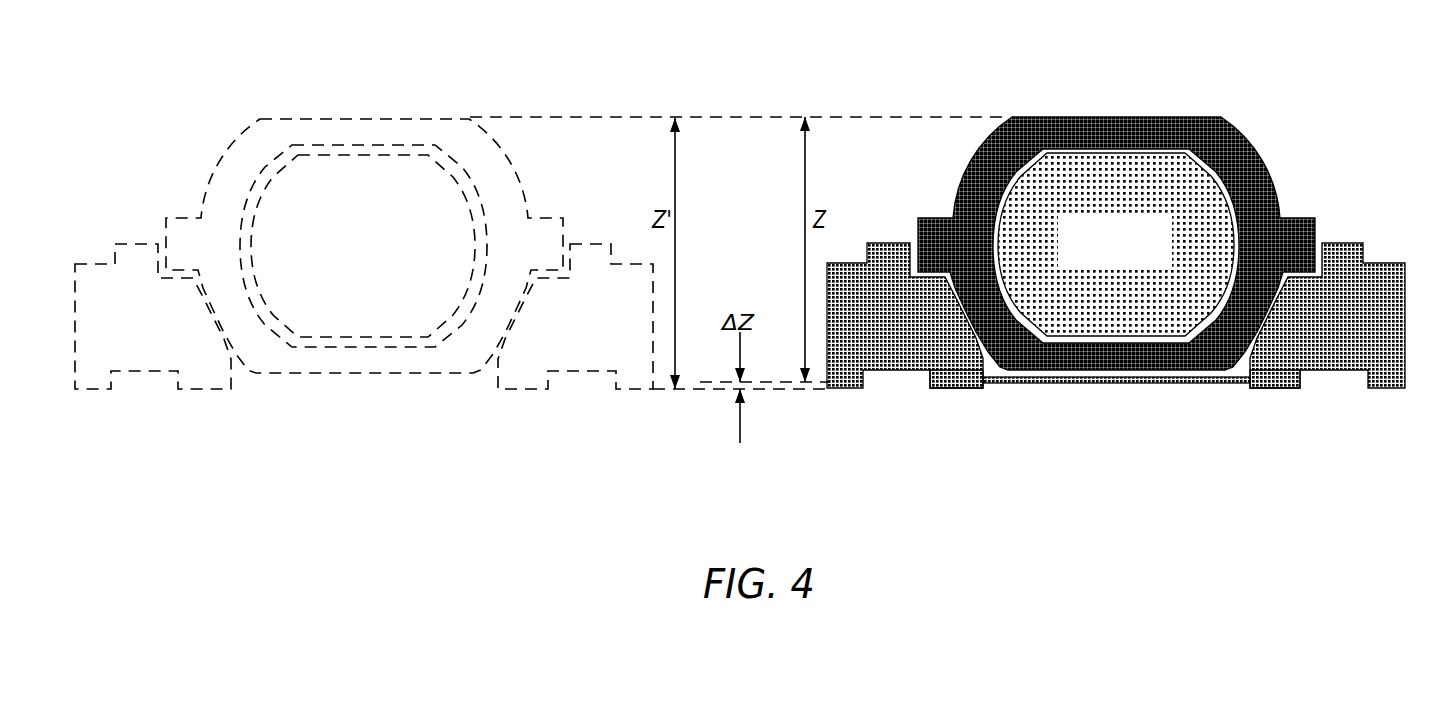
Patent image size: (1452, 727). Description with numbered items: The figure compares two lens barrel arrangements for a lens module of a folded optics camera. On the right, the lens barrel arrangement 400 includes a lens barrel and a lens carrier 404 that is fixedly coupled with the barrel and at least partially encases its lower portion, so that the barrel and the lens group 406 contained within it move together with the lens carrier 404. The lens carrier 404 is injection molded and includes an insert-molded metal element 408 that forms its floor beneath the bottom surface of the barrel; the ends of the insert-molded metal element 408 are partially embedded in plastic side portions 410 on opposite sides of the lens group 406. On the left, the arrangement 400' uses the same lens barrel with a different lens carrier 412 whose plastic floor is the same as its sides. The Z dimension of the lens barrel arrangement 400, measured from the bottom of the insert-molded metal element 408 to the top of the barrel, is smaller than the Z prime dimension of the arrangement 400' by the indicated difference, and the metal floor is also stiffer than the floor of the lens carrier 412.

The lens barrel arrangement 400 is at (1131, 229).
The arrangement 400' is at (360, 207).
The lens carrier 404 is at (1382, 248).
The lens group 406 is at (1133, 254).
The insert-molded metal element 408 is at (1125, 385).
The side portions 410 is at (953, 373).
The lens carrier 412 is at (125, 244).